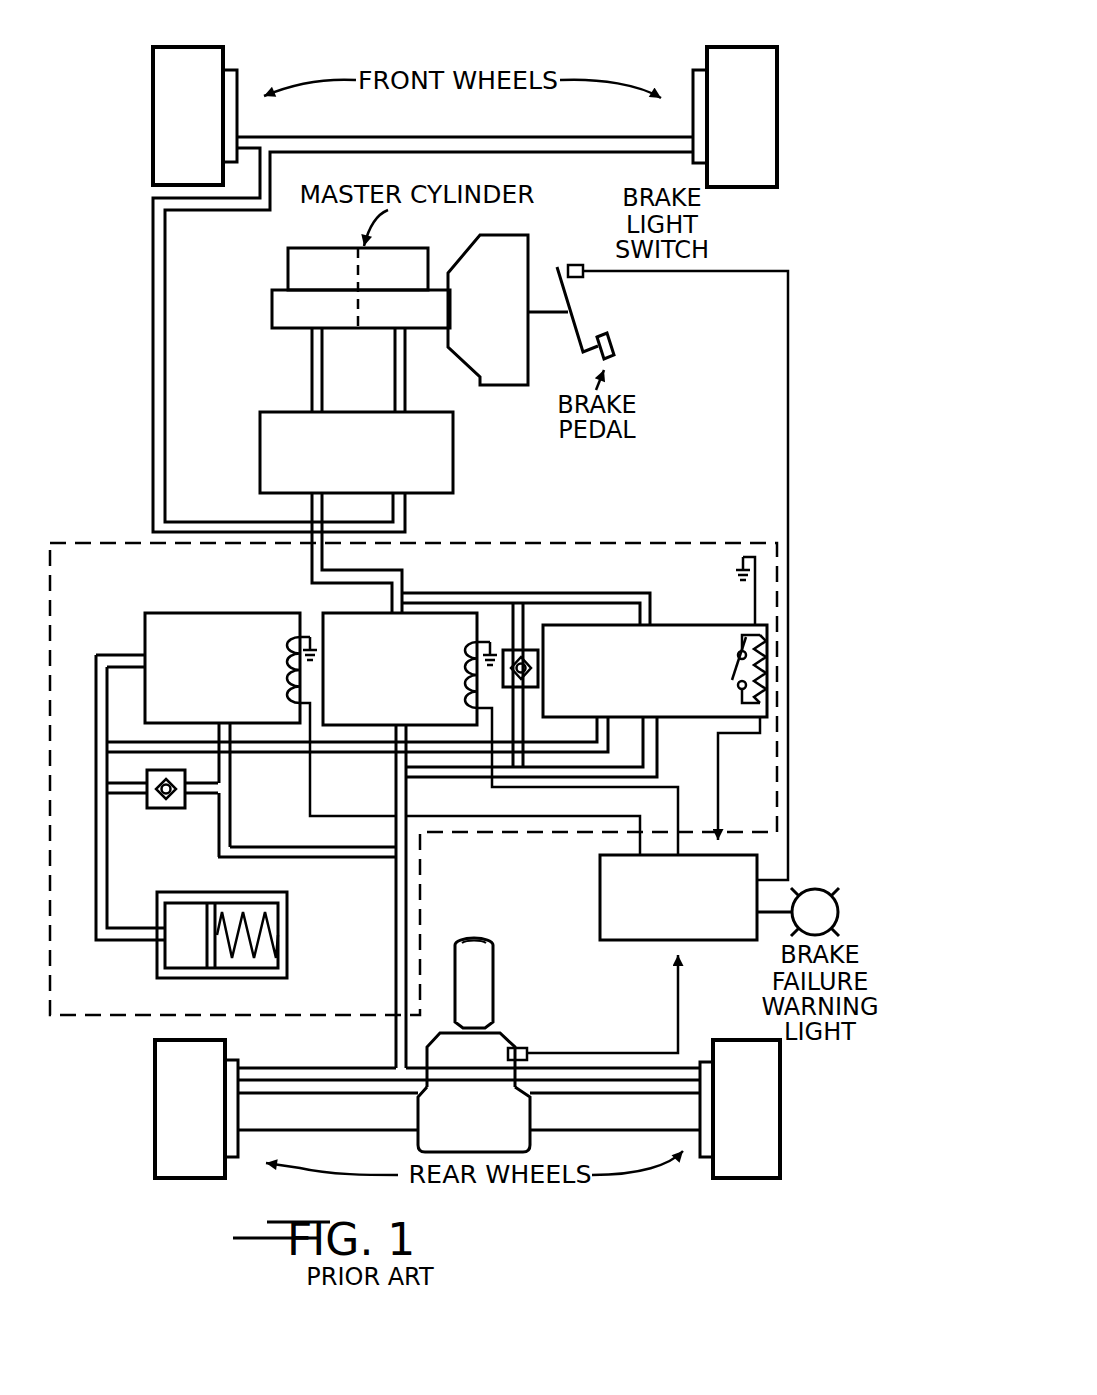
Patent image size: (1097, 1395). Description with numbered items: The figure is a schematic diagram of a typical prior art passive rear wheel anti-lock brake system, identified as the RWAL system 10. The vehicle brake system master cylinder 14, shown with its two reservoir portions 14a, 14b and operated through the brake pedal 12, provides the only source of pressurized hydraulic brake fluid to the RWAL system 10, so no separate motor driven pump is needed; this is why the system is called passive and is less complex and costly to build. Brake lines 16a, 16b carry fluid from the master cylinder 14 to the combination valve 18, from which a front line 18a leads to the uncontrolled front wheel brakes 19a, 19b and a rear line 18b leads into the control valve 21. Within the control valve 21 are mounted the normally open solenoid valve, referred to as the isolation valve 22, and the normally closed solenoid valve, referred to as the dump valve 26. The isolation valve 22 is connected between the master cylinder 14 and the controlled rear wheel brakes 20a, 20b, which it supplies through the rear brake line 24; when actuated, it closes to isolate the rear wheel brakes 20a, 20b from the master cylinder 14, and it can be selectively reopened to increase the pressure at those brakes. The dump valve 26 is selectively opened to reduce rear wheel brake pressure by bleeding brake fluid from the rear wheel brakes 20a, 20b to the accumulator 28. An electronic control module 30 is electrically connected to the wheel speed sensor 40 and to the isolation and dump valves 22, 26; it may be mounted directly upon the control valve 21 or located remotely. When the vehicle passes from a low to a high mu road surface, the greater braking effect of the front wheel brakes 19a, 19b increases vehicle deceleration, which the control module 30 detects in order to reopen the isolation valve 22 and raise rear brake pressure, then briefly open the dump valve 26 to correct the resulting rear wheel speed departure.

The RWAL system 10 is at (133, 1045).
The brake pedal 12 is at (608, 331).
The master cylinder 14 is at (294, 335).
The front reservoir of master cylinder 14a is at (395, 248).
The rear reservoir of master cylinder 14b is at (288, 263).
The front brake line 16a is at (408, 392).
The rear brake line 16b is at (310, 378).
The combination valve 18 is at (453, 448).
The front brake line from combination valve 18a is at (153, 405).
The rear brake line from combination valve 18b is at (367, 572).
The front wheel brake 19a is at (237, 124).
The front wheel brake 19b is at (693, 108).
The rear wheel brake 20a is at (238, 1138).
The rear wheel brake 20b is at (702, 1153).
The control valve 21 is at (543, 541).
The isolation valve 22 is at (352, 613).
The rear brake line 24 is at (408, 888).
The dump valve 26 is at (188, 613).
The accumulator 28 is at (236, 890).
The electronic control module 30 is at (600, 896).
The wheel speed sensor 40 is at (528, 1048).